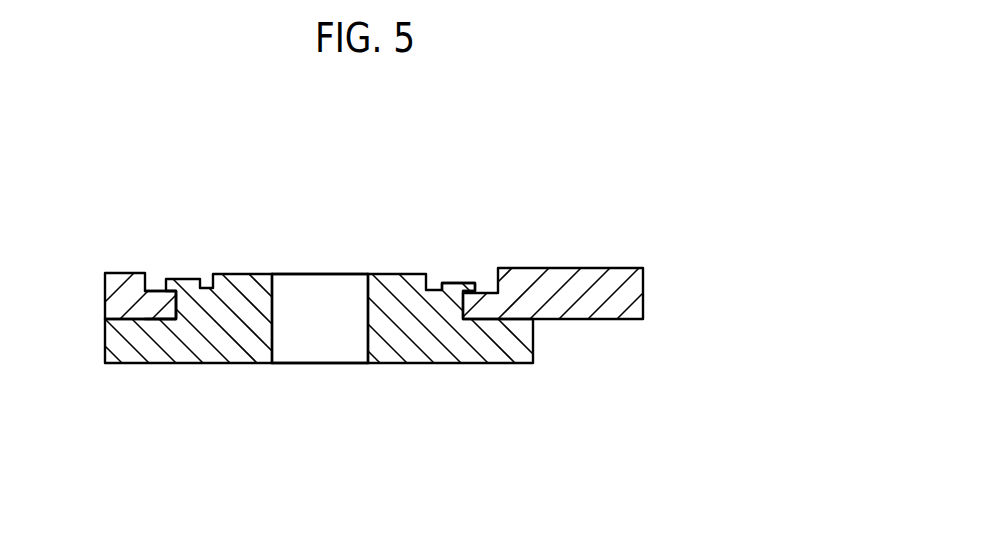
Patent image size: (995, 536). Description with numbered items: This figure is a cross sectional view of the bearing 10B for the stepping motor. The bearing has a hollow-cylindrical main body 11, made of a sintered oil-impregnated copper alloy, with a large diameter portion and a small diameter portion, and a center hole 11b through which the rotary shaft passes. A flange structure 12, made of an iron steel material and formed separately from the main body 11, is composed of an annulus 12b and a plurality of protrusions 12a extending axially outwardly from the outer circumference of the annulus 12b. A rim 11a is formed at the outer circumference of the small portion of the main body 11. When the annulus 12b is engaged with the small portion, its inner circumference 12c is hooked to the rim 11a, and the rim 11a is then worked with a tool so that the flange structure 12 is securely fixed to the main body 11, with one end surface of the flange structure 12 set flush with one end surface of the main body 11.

The connector assembly 10B is at (669, 217).
The main body 11 is at (207, 350).
The rim 11a is at (464, 283).
The center hole 11b is at (340, 296).
The flange structure 12 is at (557, 268).
The protrusions 12a is at (618, 268).
The annulus 12b is at (121, 273).
The inner circumference 12c is at (178, 302).